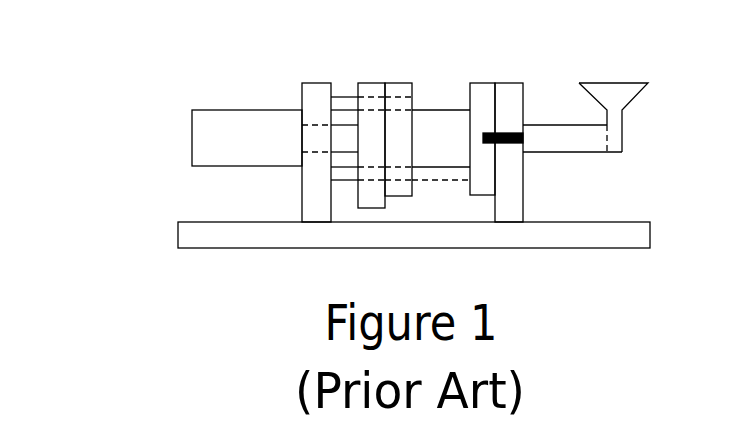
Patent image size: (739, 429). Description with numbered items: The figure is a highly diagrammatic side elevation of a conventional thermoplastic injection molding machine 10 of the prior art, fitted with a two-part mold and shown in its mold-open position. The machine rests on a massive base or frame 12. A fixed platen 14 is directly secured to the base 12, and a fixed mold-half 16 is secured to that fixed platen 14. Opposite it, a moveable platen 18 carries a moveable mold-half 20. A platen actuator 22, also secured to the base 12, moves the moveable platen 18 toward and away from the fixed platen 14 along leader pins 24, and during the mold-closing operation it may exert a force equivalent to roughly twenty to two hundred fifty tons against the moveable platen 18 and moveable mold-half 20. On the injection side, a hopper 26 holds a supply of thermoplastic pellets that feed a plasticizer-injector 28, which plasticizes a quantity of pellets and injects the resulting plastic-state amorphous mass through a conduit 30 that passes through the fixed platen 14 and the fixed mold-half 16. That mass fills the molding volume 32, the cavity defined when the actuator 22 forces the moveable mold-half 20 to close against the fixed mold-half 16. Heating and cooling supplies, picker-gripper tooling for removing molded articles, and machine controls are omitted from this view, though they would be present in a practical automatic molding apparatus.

The thermoplastic injection molding machine 10 is at (180, 285).
The base 12 is at (600, 242).
The fixed platen 14 is at (512, 88).
The fixed mold-half 16 is at (483, 90).
The moveable platen 18 is at (358, 90).
The moveable mold-half 20 is at (399, 87).
The platen actuator 22 is at (256, 113).
The leader pins 24 is at (441, 89).
The hopper 26 is at (612, 90).
The plasticizer-injector 28 is at (552, 145).
The conduit 30 is at (505, 133).
The molding volume 32 is at (410, 137).